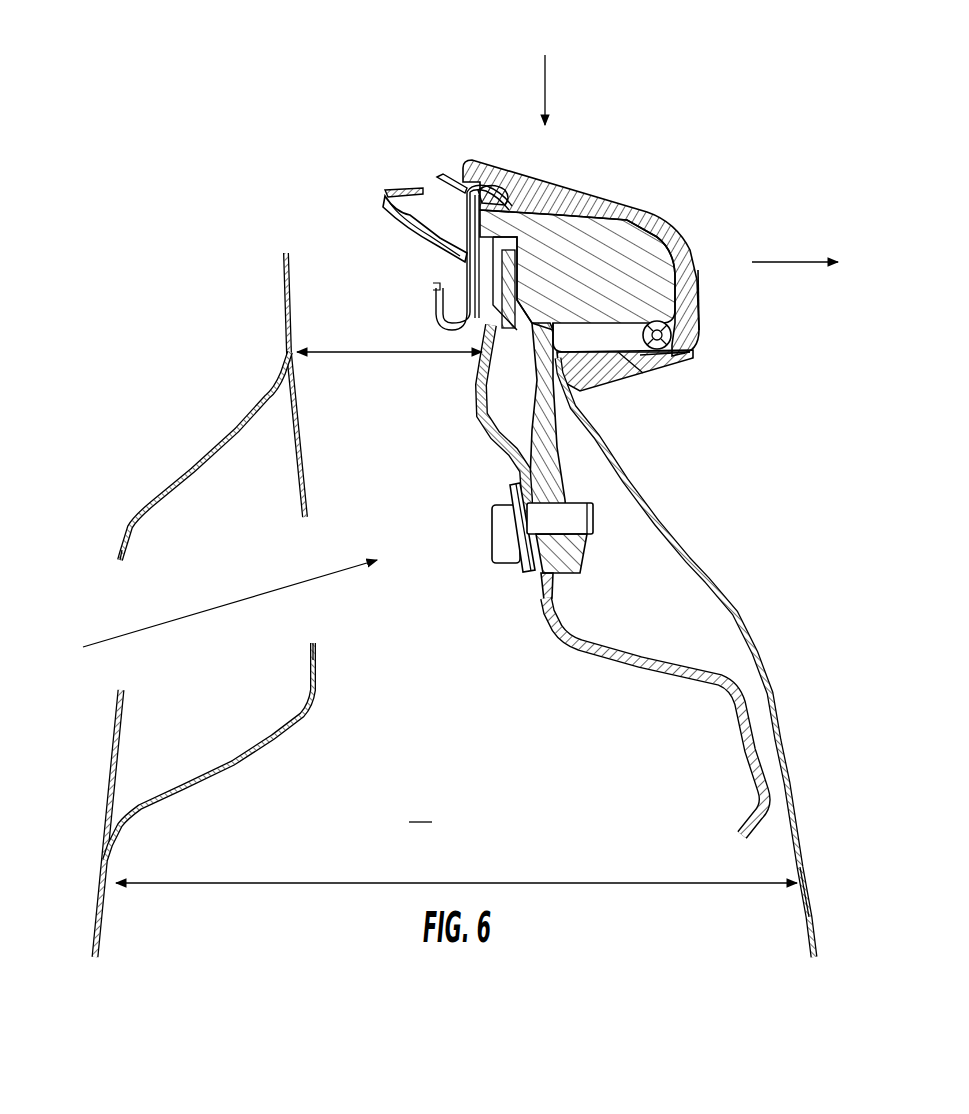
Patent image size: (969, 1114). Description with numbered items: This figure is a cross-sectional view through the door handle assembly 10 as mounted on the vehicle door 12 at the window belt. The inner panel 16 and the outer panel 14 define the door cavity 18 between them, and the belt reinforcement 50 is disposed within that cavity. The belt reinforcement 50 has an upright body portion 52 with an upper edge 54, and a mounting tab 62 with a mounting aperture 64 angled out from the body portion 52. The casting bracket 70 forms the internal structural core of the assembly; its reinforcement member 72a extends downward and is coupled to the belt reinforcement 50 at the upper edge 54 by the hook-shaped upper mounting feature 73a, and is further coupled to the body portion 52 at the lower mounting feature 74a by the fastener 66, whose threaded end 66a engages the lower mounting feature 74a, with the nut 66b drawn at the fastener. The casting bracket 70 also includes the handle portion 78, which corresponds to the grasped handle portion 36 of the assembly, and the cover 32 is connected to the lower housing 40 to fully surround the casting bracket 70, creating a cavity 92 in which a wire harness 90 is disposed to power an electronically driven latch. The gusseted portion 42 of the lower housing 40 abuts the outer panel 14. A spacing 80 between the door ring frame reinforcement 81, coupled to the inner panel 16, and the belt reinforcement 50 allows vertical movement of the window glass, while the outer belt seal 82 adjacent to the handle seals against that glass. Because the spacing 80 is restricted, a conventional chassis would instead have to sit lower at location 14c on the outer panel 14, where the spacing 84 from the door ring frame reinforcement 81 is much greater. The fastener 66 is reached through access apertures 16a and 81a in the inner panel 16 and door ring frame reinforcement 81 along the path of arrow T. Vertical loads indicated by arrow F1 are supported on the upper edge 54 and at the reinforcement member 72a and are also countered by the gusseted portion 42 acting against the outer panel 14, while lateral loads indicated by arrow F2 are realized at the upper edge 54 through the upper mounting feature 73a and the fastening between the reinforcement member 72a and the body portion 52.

The door handle assembly 10 is at (620, 123).
The vehicle door 12 is at (193, 172).
The outer panel 14 is at (722, 657).
The location on outer panel 14c is at (802, 855).
The inner panel 16 is at (167, 425).
The access aperture 16a is at (127, 598).
The inner door cavity 18 is at (422, 809).
The cover 32 is at (672, 215).
The handle portion 36 is at (603, 185).
The lower housing 40 is at (697, 333).
The gusseted portion 42 is at (593, 387).
The belt reinforcement 50 is at (624, 716).
The body portion 52 is at (590, 647).
The upper edge 54 is at (481, 237).
The mounting tab 62 is at (557, 588).
The mounting aperture 64 is at (547, 553).
The fastener 66 is at (556, 557).
The threaded end 66a is at (583, 518).
The nut 66b is at (502, 520).
The casting bracket 70 is at (611, 236).
The reinforcement member 72a is at (540, 440).
The upper mounting feature 73a is at (500, 165).
The lower mounting feature 74a is at (568, 495).
The handle portion 78 is at (698, 268).
The spacing 80 is at (355, 353).
The door ring frame reinforcement 81 is at (227, 709).
The access aperture 81a is at (313, 547).
The outer belt seal 82 is at (386, 200).
The spacing 84 is at (345, 883).
The wire harness 90 is at (640, 355).
The cavity 92 is at (647, 377).
The vertical force arrow F1 is at (549, 73).
The lateral force arrow F2 is at (801, 241).
The tool access path arrow T is at (227, 602).